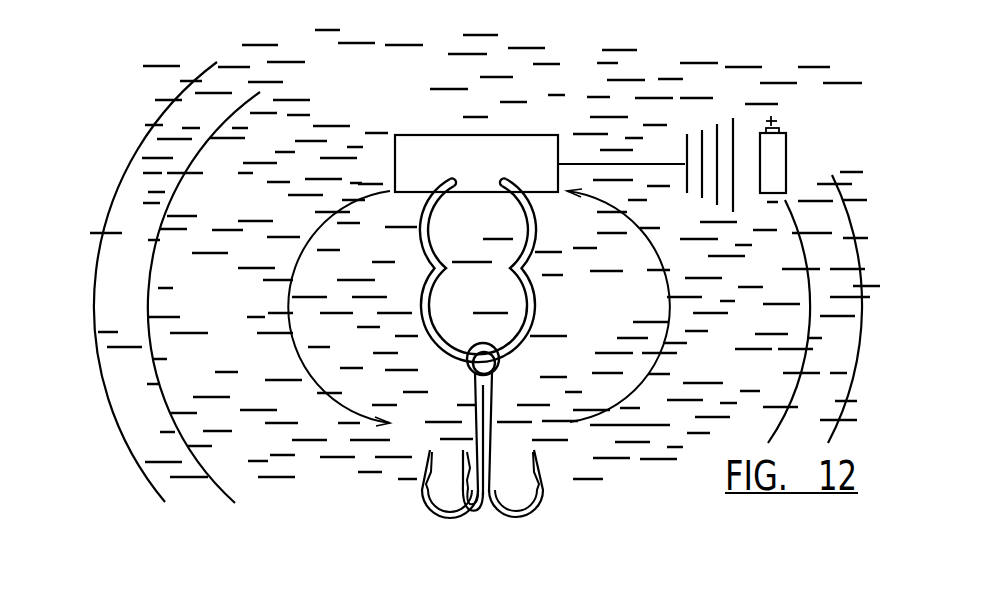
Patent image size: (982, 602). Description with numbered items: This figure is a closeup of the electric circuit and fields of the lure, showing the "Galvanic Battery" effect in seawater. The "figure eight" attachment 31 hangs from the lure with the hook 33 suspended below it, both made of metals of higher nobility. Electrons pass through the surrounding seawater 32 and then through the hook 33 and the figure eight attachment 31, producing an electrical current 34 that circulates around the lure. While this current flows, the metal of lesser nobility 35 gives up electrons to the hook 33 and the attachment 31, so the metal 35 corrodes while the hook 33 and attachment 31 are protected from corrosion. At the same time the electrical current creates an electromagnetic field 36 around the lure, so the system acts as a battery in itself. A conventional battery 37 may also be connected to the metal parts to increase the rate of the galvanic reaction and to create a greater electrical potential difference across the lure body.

The "figure eight" attachment 31 is at (537, 319).
The seawater 32 is at (861, 338).
The hook 33 is at (425, 511).
The electrical current 34 is at (292, 303).
The metal of lesser nobility 35 is at (430, 135).
The electromagnetic field 36 is at (171, 282).
The conventional battery 37 is at (787, 150).